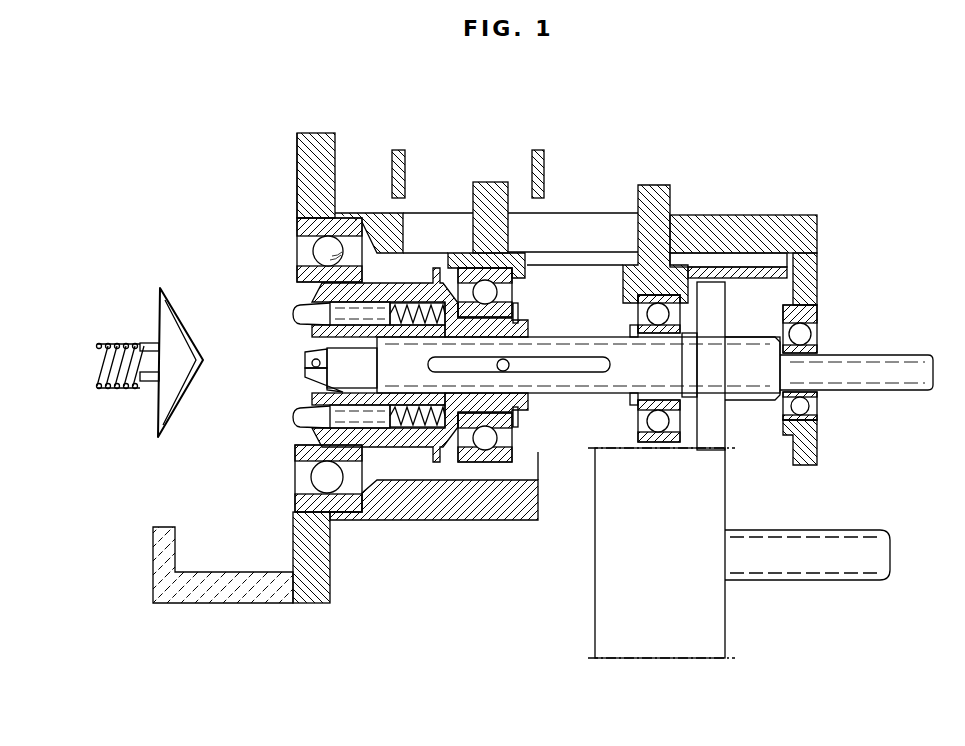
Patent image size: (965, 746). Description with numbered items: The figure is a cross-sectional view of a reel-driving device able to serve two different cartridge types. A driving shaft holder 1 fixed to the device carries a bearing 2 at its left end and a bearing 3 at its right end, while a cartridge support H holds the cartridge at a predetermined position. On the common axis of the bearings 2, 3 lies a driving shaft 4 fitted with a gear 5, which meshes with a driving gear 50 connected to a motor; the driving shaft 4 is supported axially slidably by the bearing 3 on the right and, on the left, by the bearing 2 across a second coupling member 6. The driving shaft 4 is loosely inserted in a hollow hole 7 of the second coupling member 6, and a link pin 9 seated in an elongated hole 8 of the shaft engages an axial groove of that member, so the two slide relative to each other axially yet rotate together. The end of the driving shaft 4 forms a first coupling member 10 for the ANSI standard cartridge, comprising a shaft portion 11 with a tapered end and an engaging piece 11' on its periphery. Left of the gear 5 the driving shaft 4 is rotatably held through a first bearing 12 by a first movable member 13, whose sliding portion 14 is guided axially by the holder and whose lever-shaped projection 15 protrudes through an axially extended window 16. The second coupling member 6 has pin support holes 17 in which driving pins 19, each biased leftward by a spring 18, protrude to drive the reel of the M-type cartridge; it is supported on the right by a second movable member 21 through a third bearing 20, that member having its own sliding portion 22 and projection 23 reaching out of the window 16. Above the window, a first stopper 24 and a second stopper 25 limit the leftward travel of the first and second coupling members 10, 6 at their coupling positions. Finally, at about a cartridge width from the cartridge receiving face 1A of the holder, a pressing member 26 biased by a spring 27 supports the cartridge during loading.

The driving shaft holder 1 is at (320, 150).
The cartridge receiving face 1A is at (297, 165).
The bearing 2 is at (321, 477).
The bearing 3 is at (804, 330).
The driving shaft 4 is at (630, 449).
The gear 5 is at (717, 300).
The second coupling member 6 is at (427, 442).
The hollow hole 7 is at (535, 390).
The elongated hole 8 is at (602, 372).
The link pin 9 is at (503, 372).
The first coupling member 10 is at (276, 385).
The shaft portion 11 is at (289, 371).
The engaging piece 11' is at (297, 395).
The first bearing 12 is at (682, 313).
The first movable member 13 is at (742, 212).
The sliding portion 14 is at (708, 273).
The lever-shaped projection 15 is at (730, 262).
The axially extended window 16 is at (611, 230).
The pin support holes 17 is at (413, 428).
The spring 18 is at (387, 428).
The driving pin 19 is at (298, 310).
The third bearing 20 is at (492, 285).
The second movable member 21 is at (492, 183).
The sliding portion 22 is at (461, 257).
The projection 23 is at (490, 212).
The first stopper 24 is at (543, 165).
The second stopper 25 is at (406, 166).
The pressing member 26 is at (150, 380).
The spring 27 is at (120, 392).
The driving gear 50 is at (672, 640).
The cartridge support H is at (153, 580).